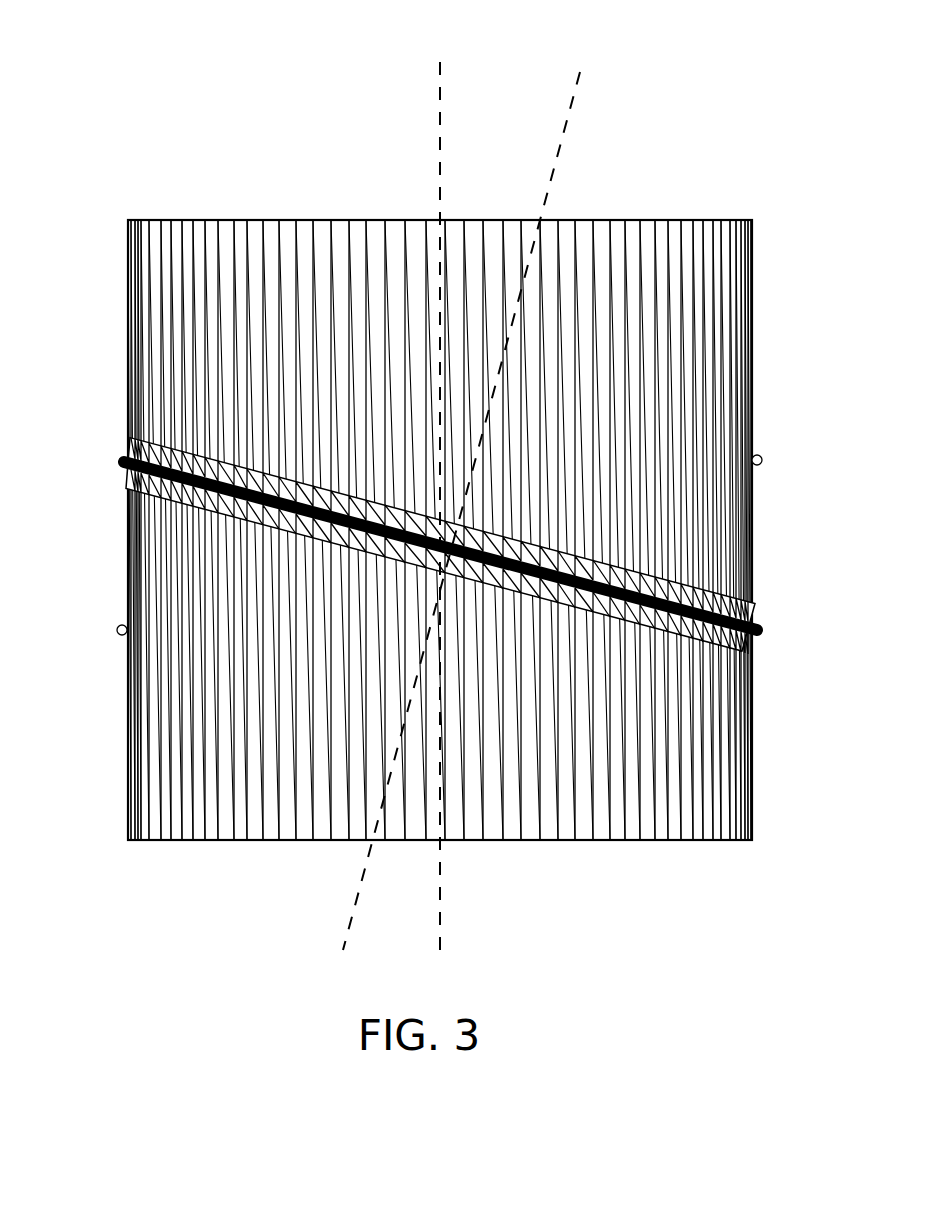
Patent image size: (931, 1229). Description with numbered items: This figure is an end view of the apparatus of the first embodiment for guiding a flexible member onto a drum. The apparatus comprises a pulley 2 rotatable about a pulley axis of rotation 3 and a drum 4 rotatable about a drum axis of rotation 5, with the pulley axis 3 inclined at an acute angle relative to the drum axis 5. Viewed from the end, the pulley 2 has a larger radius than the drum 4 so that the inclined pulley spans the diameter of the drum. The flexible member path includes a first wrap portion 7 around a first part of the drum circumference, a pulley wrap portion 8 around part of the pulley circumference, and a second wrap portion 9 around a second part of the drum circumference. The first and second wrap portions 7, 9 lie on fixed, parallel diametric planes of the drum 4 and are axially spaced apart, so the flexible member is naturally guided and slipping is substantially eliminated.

The pulley 2 is at (610, 620).
The pulley axis of rotation 3 is at (573, 100).
The drum 4 is at (693, 228).
The drum axis of rotation 5 is at (441, 88).
The first wrap portion 7 is at (763, 459).
The pulley wrap portion 8 is at (645, 620).
The second wrap portion 9 is at (117, 630).